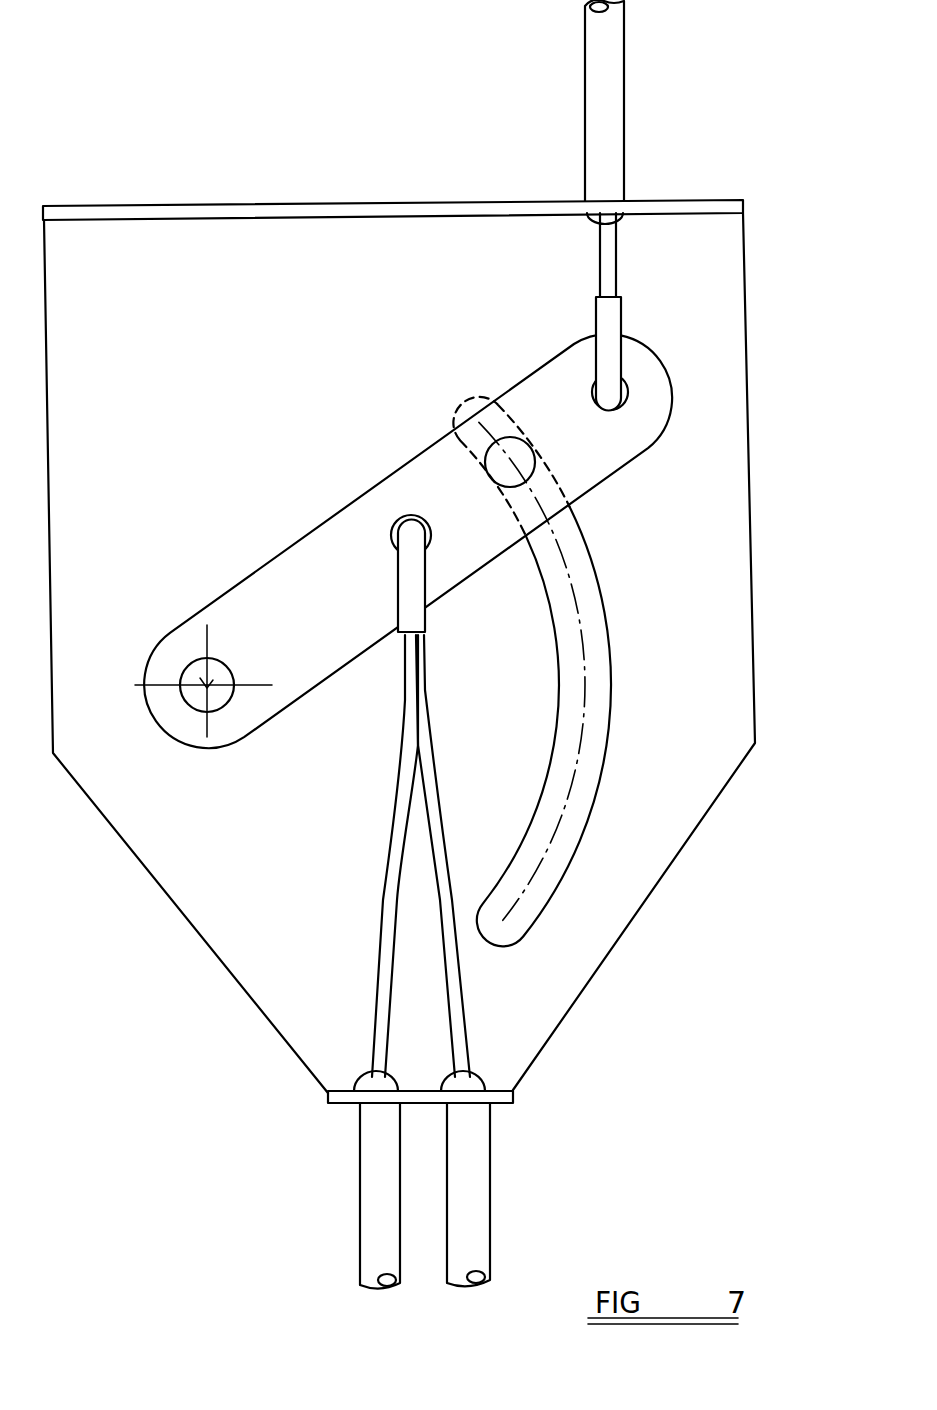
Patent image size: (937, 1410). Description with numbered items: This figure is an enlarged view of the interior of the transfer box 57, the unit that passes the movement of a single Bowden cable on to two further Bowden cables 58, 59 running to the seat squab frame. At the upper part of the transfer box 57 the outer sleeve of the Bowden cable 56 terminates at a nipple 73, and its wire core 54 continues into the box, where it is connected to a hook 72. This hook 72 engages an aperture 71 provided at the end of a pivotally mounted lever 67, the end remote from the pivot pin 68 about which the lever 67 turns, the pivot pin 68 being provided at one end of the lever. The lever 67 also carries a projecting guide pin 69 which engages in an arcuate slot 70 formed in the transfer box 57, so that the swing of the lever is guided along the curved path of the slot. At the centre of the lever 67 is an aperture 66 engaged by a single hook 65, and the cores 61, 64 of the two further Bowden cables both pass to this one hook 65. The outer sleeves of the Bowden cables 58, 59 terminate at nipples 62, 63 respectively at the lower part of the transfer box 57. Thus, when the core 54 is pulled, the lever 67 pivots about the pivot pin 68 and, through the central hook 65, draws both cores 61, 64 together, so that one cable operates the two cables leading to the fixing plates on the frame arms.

The wire core 54 is at (617, 262).
The outer sleeve 56 is at (632, 92).
The transfer box 57 is at (713, 697).
The Bowden cable 58 is at (363, 1197).
The Bowden cable 59 is at (482, 1218).
The core 61 is at (440, 850).
The nipple 62 is at (372, 1087).
The nipple 63 is at (480, 1098).
The core 64 is at (386, 878).
The hook 65 is at (418, 617).
The aperture 66 is at (410, 520).
The lever 67 is at (310, 560).
The pivot pin 68 is at (202, 680).
The guide pin 69 is at (512, 447).
The arcuate slot 70 is at (607, 618).
The aperture 71 is at (637, 390).
The hook 72 is at (612, 325).
The nipple 73 is at (614, 219).